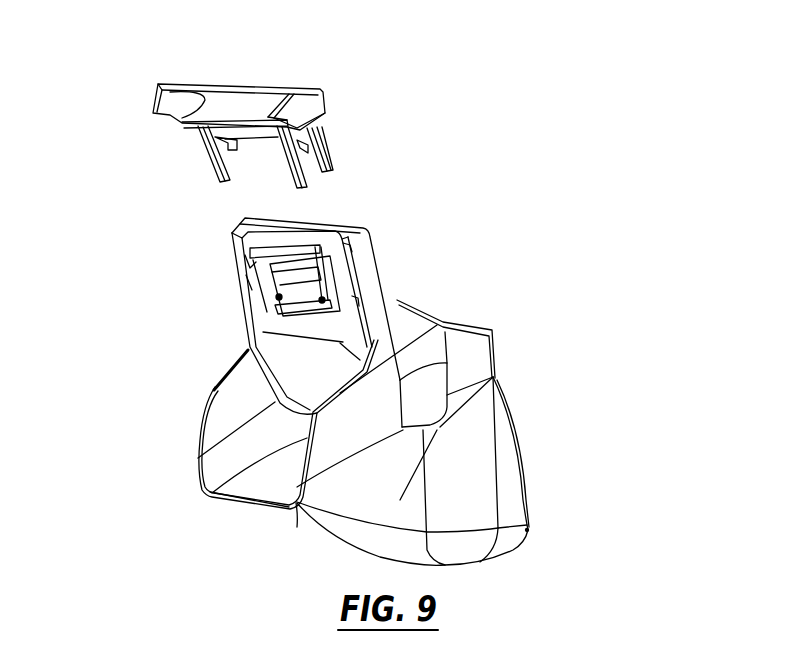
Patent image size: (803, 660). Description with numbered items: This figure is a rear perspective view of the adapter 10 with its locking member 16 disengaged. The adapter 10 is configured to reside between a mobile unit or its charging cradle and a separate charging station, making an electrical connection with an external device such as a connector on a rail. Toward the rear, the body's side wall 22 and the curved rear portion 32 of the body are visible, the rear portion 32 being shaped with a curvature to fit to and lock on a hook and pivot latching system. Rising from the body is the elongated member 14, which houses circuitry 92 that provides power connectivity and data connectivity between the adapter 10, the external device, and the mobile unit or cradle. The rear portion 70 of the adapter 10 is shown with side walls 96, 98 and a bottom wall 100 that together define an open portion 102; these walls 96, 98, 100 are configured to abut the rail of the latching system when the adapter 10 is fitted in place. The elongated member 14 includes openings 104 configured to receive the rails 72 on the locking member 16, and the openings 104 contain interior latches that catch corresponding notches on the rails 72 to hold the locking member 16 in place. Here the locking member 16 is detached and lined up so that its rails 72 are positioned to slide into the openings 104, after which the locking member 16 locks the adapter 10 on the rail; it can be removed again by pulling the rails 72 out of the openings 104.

The adapter 10 is at (583, 178).
The elongated member 14 is at (377, 267).
The locking member 16 is at (155, 110).
The side wall 22 is at (503, 477).
The rear portion of the body 32 is at (493, 377).
The rear portion 70 is at (355, 420).
The rails 72 is at (215, 165).
The circuitry 92 is at (277, 272).
The side wall 96 is at (216, 388).
The side wall 98 is at (325, 430).
The bottom wall 100 is at (245, 492).
The open portion 102 is at (258, 364).
The openings 104 is at (342, 243).